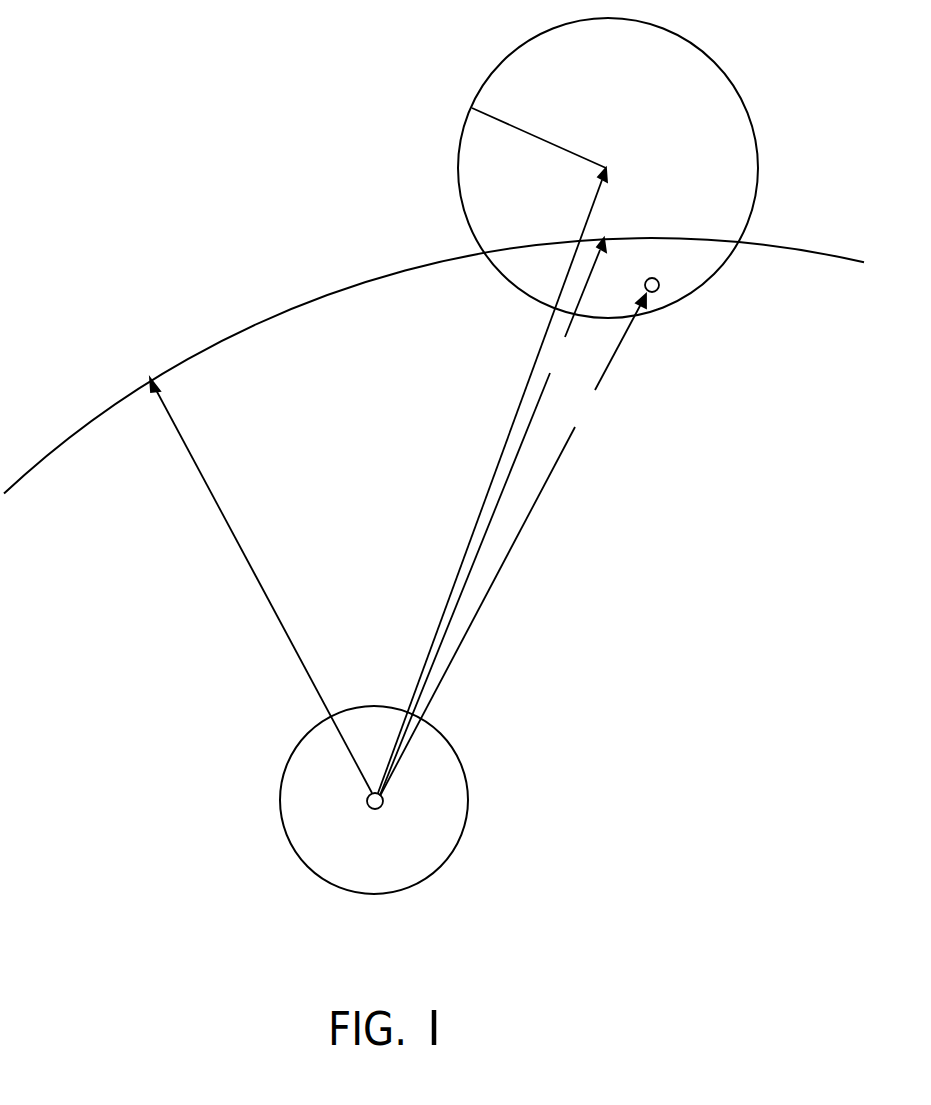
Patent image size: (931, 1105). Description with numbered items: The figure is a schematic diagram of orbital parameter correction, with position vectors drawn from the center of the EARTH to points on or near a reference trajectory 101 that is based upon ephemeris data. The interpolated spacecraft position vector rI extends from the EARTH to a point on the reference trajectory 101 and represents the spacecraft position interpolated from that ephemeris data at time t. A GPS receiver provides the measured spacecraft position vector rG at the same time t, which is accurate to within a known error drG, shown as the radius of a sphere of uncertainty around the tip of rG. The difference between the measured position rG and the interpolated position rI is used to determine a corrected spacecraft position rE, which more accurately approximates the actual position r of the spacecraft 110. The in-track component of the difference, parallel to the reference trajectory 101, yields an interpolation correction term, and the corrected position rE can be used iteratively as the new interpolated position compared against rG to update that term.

The reference trajectory 101 is at (185, 358).
The spacecraft 110 is at (658, 282).
The interpolated spacecraft position vector rI is at (261, 585).
The measured spacecraft position vector rG is at (504, 480).
The corrected spacecraft position vector rE is at (493, 516).
The actual spacecraft position r is at (513, 545).
The known error of measured position drG is at (539, 140).
The Earth EARTH is at (423, 800).